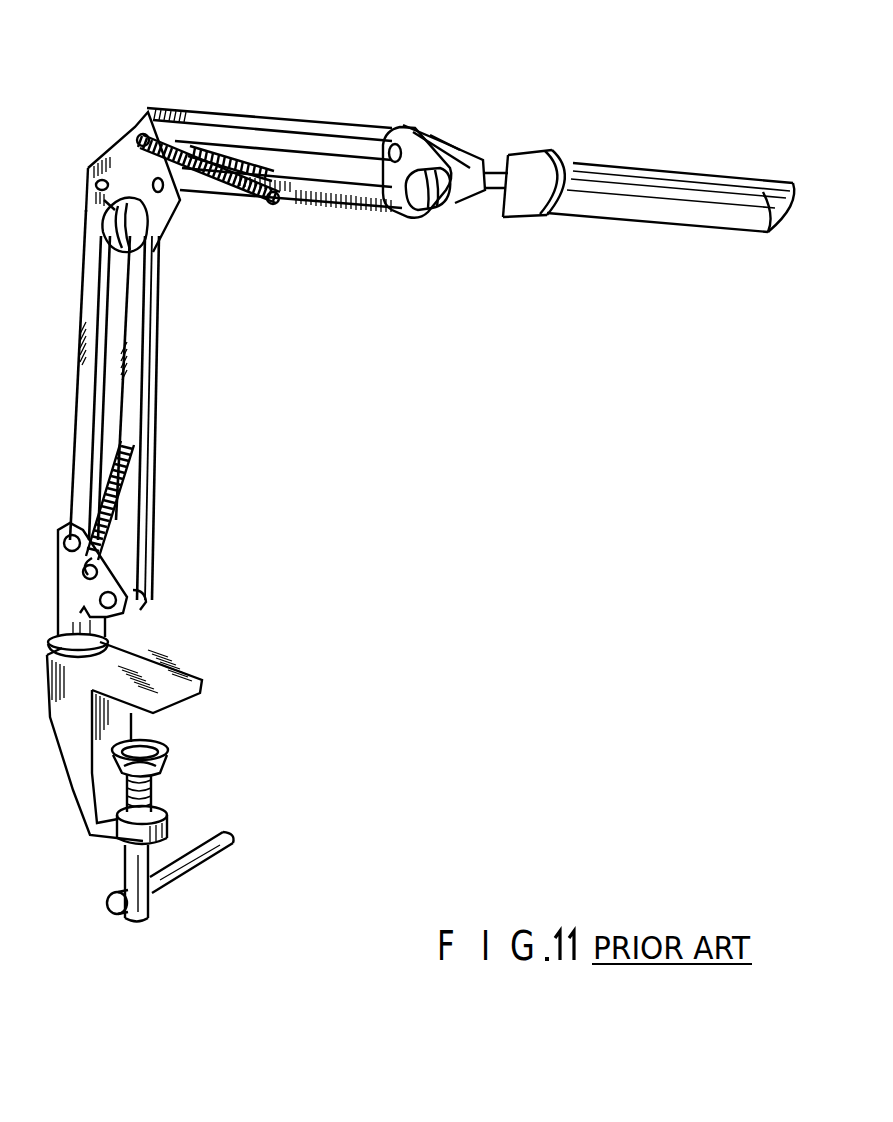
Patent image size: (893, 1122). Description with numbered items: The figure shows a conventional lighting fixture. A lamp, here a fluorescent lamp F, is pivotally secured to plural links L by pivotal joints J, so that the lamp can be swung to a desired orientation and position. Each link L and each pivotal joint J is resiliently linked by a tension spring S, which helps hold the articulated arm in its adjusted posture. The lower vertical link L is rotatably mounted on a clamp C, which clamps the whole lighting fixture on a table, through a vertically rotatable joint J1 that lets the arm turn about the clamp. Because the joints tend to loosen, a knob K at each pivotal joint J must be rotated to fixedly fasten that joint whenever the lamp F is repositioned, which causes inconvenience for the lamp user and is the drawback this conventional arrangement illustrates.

The link L is at (297, 128).
The tension spring S is at (183, 110).
The pivotal joint J is at (455, 135).
The knob K is at (100, 230).
The fluorescent lamp F is at (627, 178).
The vertically rotatable joint J1 is at (107, 628).
The clamp C is at (167, 753).